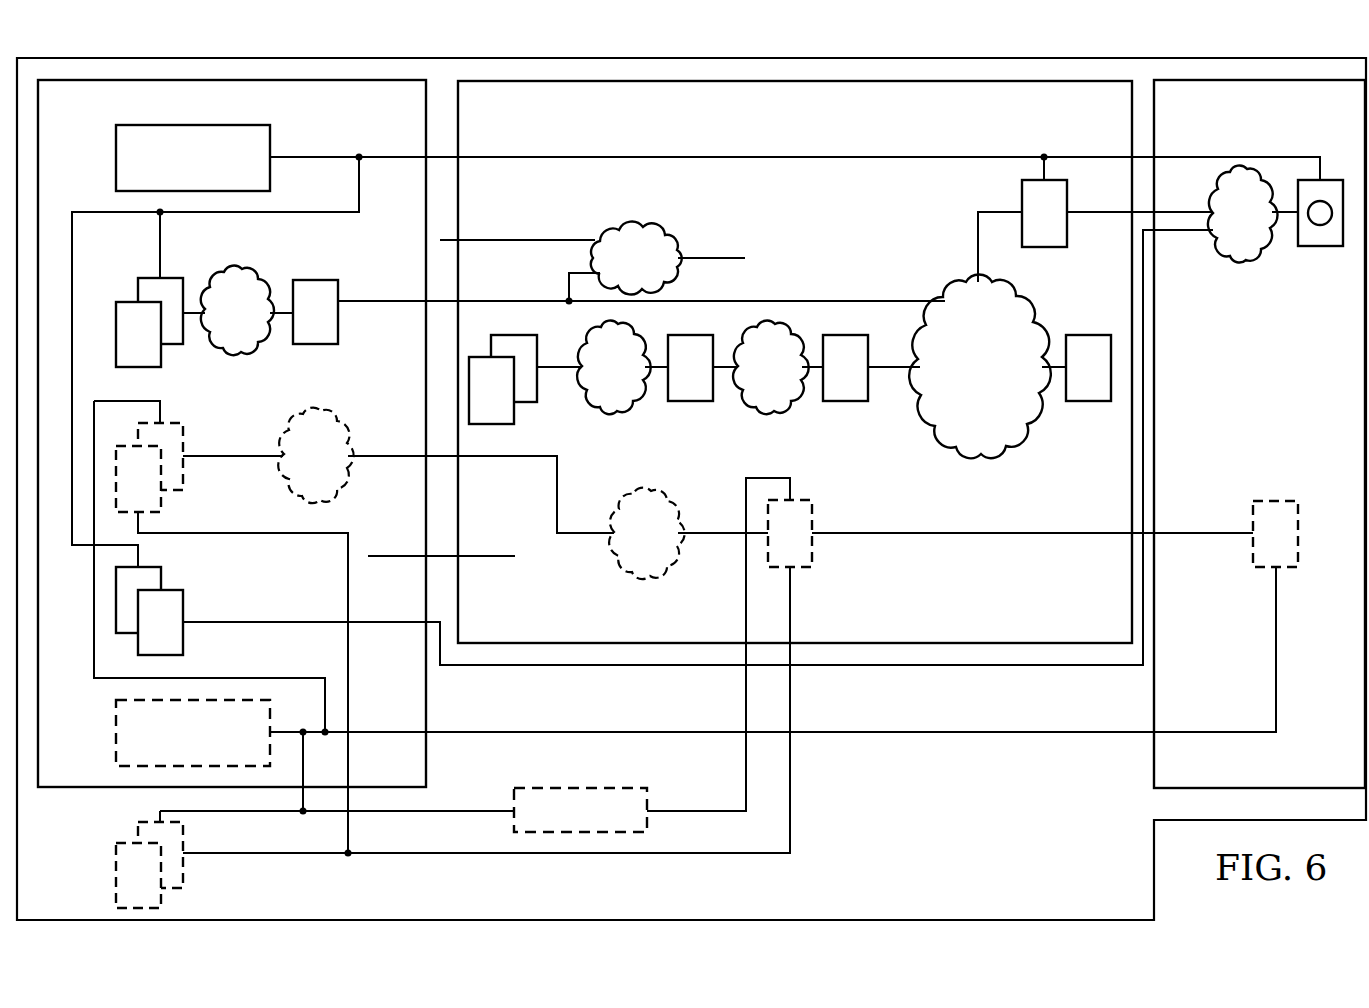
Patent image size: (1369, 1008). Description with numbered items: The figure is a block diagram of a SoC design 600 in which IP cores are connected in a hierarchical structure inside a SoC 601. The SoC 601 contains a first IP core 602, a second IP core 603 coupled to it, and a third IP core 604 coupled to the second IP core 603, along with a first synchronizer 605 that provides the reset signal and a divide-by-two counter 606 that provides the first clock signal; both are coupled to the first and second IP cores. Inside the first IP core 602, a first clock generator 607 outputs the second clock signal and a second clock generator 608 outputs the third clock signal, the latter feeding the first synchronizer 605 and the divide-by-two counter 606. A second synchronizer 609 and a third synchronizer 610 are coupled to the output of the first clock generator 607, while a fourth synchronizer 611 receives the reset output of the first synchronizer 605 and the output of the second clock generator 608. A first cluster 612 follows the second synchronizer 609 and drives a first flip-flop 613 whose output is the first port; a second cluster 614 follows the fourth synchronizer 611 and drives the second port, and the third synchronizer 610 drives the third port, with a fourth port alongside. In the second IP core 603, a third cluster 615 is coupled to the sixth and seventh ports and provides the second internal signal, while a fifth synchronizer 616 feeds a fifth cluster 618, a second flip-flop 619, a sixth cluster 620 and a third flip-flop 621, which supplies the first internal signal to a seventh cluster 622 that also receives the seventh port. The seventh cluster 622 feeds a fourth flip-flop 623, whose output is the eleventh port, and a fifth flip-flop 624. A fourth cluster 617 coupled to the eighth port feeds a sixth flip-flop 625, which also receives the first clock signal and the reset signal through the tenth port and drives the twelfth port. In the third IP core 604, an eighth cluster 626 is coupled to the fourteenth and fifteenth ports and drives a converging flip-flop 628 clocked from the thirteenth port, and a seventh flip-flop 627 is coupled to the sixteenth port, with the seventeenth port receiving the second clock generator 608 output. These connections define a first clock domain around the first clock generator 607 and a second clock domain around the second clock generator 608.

The SoC design 600 is at (232, 46).
The SoC 601 is at (993, 863).
The first IP core 602 is at (402, 118).
The second IP core 603 is at (1108, 118).
The third IP core 604 is at (1340, 118).
The first synchronizer 605 is at (114, 878).
The divide-by-two counter 606 is at (647, 818).
The first clock generator 607 is at (116, 142).
The second clock generator 608 is at (116, 710).
The second synchronizer 609 is at (124, 298).
The third synchronizer 610 is at (187, 646).
The fourth synchronizer 611 is at (165, 503).
The first cluster 612 is at (237, 353).
The first flip-flop 613 is at (315, 280).
The second cluster 614 is at (338, 488).
The third cluster 615 is at (635, 228).
The fifth synchronizer 616 is at (518, 416).
The fourth cluster 617 is at (646, 577).
The fifth cluster 618 is at (614, 412).
The second flip-flop 619 is at (690, 401).
The sixth cluster 620 is at (770, 412).
The third flip-flop 621 is at (845, 401).
The seventh cluster 622 is at (947, 292).
The fourth flip-flop 623 is at (1045, 247).
The fifth flip-flop 624 is at (1088, 401).
The sixth flip-flop 625 is at (812, 556).
The eighth cluster 626 is at (1244, 260).
The seventh flip-flop 627 is at (1285, 500).
The converging flip-flop 628 is at (1320, 246).